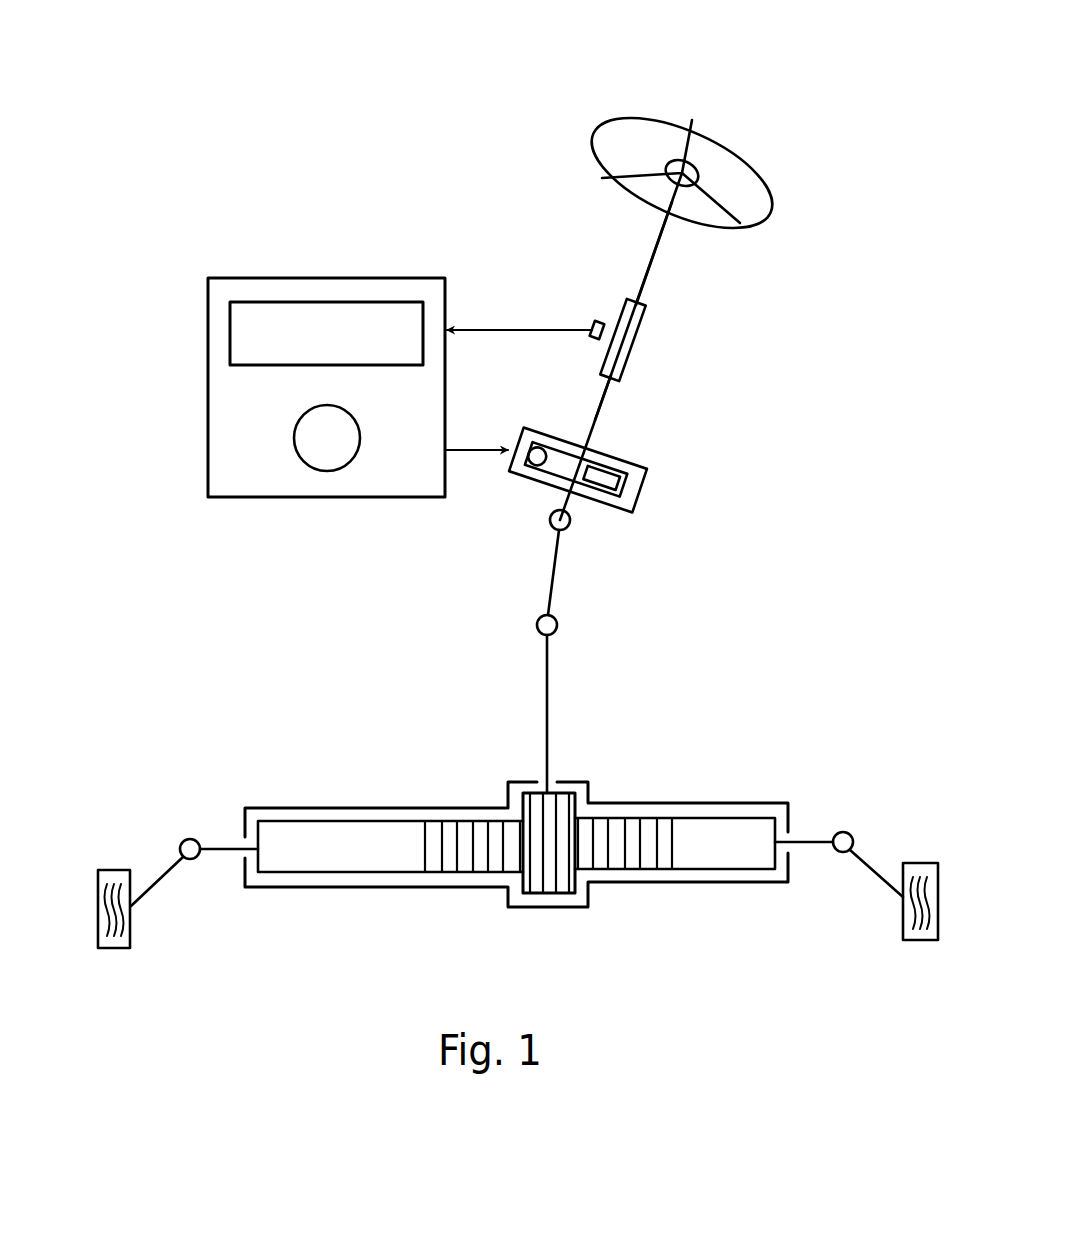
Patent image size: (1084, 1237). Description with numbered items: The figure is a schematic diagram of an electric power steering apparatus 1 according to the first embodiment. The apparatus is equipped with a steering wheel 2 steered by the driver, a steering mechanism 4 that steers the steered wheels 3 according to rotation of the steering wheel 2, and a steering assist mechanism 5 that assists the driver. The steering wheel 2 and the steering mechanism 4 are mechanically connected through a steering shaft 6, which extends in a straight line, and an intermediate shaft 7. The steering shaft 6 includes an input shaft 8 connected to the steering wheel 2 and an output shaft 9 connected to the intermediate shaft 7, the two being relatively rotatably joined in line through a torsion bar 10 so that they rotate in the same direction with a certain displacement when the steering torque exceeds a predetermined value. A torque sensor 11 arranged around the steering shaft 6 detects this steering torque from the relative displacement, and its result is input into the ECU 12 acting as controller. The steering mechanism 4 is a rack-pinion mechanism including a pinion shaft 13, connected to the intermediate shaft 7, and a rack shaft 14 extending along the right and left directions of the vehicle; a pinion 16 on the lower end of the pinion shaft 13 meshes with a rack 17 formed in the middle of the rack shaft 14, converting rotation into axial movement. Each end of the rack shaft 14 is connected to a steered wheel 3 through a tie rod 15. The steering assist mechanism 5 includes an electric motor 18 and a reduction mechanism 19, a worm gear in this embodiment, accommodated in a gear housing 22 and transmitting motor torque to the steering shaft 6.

The electric power steering apparatus 1 is at (378, 163).
The steering wheel 2 is at (684, 122).
The steered wheels 3 is at (114, 870).
The steering mechanism 4 is at (517, 838).
The steering assist mechanism 5 is at (358, 431).
The steering shaft 6 is at (660, 244).
The intermediate shaft 7 is at (554, 590).
The input shaft 8 is at (643, 285).
The output shaft 9 is at (604, 407).
The torsion bar 10 is at (623, 343).
The torque sensor 11 is at (596, 321).
The ECU 12 is at (380, 313).
The pinion shaft 13 is at (549, 712).
The rack shaft 14 is at (724, 872).
The tie rods 15 is at (868, 873).
The pinion 16 is at (549, 886).
The rack 17 is at (450, 863).
The electric motor 18 is at (327, 462).
The reduction mechanism 19 is at (614, 486).
The gear housing 22 is at (597, 503).